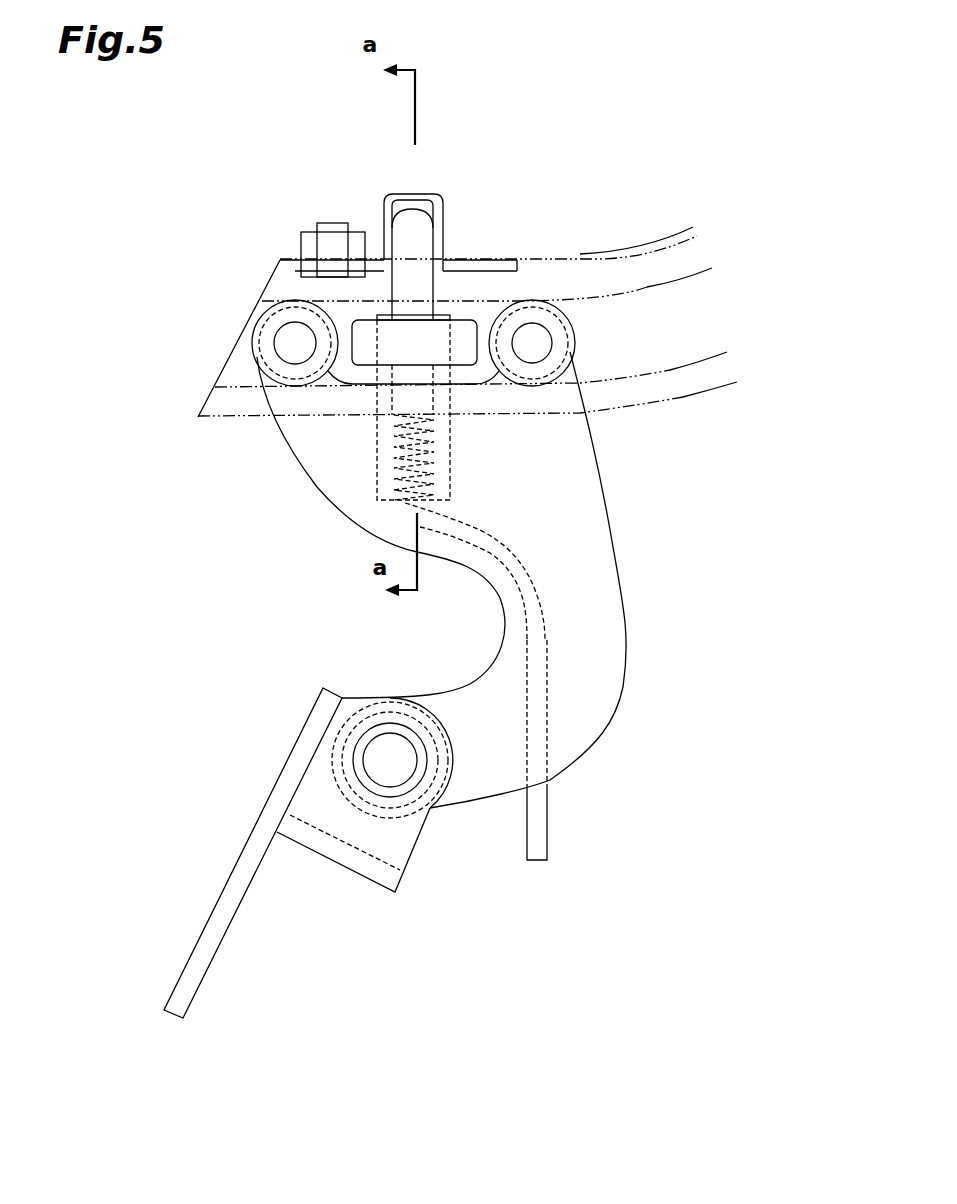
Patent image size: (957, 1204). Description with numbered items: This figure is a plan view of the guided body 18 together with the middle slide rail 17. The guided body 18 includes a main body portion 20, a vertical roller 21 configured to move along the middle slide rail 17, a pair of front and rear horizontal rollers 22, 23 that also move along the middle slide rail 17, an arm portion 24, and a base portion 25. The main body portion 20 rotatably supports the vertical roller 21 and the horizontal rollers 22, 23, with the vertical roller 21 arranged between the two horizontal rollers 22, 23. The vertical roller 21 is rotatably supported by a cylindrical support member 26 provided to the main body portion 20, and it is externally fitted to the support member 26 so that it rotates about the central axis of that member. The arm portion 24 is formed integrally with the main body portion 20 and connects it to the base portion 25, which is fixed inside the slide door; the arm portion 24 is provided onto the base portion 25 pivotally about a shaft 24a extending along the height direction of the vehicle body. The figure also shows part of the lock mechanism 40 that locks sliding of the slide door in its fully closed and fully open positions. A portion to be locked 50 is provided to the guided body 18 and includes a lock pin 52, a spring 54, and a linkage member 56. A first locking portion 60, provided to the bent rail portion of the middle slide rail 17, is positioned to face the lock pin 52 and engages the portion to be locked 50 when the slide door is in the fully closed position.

The middle slide rail 17 is at (630, 243).
The guided body 18 is at (645, 653).
The main body portion 20 is at (565, 437).
The vertical roller 21 is at (465, 332).
The horizontal roller 22 is at (270, 312).
The horizontal roller 23 is at (565, 325).
The arm portion 24 is at (475, 782).
The shaft 24a is at (383, 752).
The base portion 25 is at (215, 930).
The support member 26 is at (375, 445).
The lock mechanism 40 is at (365, 213).
The portion to be locked 50 is at (387, 480).
The lock pin 52 is at (410, 232).
The spring 54 is at (435, 465).
The linkage member 56 is at (540, 828).
The first locking portion 60 is at (432, 193).